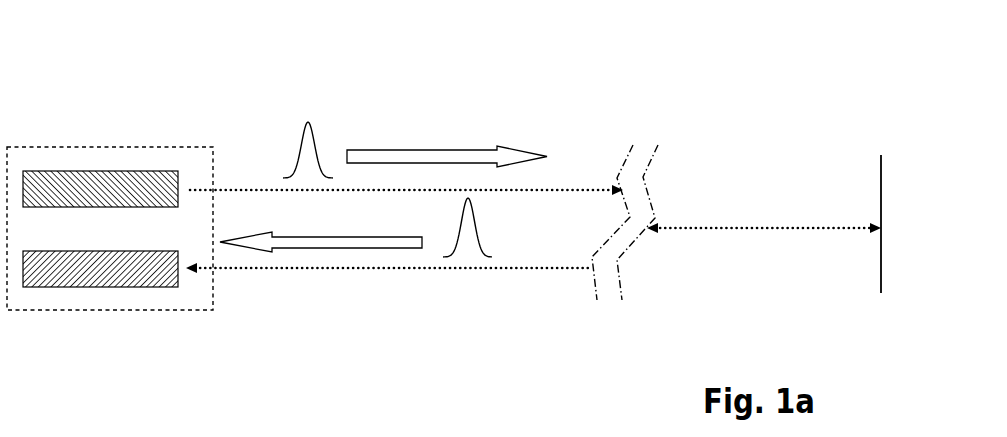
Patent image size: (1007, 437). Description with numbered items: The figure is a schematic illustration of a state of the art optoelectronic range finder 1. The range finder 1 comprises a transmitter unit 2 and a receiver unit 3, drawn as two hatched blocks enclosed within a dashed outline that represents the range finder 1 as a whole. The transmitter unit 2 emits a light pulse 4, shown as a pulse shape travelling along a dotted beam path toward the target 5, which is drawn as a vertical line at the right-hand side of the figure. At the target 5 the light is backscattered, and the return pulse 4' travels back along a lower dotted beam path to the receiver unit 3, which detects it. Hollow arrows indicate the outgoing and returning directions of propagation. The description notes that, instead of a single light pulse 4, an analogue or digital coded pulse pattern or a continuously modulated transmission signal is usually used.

The range finder 1 is at (110, 172).
The transmitter unit 2 is at (124, 138).
The receiver unit 3 is at (124, 310).
The light pulse 4 is at (337, 115).
The return pulse 4' is at (506, 266).
The target 5 is at (819, 186).